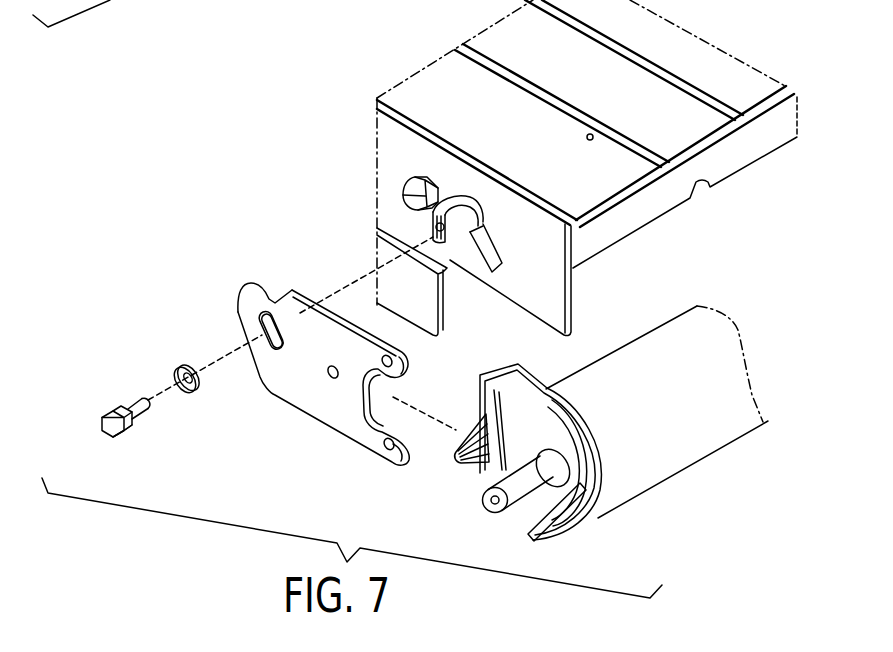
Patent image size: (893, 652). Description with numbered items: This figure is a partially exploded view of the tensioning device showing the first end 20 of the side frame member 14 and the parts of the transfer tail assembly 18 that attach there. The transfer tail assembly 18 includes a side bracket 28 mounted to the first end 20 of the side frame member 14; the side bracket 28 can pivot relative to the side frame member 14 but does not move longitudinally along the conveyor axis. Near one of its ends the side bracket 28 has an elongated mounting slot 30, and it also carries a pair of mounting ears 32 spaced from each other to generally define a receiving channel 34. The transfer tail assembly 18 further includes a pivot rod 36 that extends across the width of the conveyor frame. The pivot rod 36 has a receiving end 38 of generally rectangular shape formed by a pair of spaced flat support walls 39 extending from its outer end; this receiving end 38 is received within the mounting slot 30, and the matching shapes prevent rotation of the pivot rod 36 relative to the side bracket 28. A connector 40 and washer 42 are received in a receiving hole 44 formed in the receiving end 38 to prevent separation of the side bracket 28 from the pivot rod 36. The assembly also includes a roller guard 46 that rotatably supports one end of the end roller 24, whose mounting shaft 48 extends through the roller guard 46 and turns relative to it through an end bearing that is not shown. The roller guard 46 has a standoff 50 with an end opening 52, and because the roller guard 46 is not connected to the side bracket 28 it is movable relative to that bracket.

The side frame member 14 is at (400, 141).
The transfer tail assembly 18 is at (228, 234).
The first end 20 is at (556, 280).
The end roller 24 is at (730, 428).
The side bracket 28 is at (305, 393).
The mounting slot 30 is at (245, 306).
The mounting ears 32 is at (405, 357).
The receiving channel 34 is at (378, 393).
The pivot rod 36 is at (470, 208).
The receiving end 38 is at (433, 218).
The flat support walls 39 is at (484, 220).
The connector 40 is at (128, 400).
The washer 42 is at (170, 370).
The receiving hole 44 is at (445, 243).
The roller guard 46 is at (615, 503).
The mounting shaft 48 is at (557, 520).
The standoff 50 is at (477, 458).
The end opening 52 is at (452, 455).